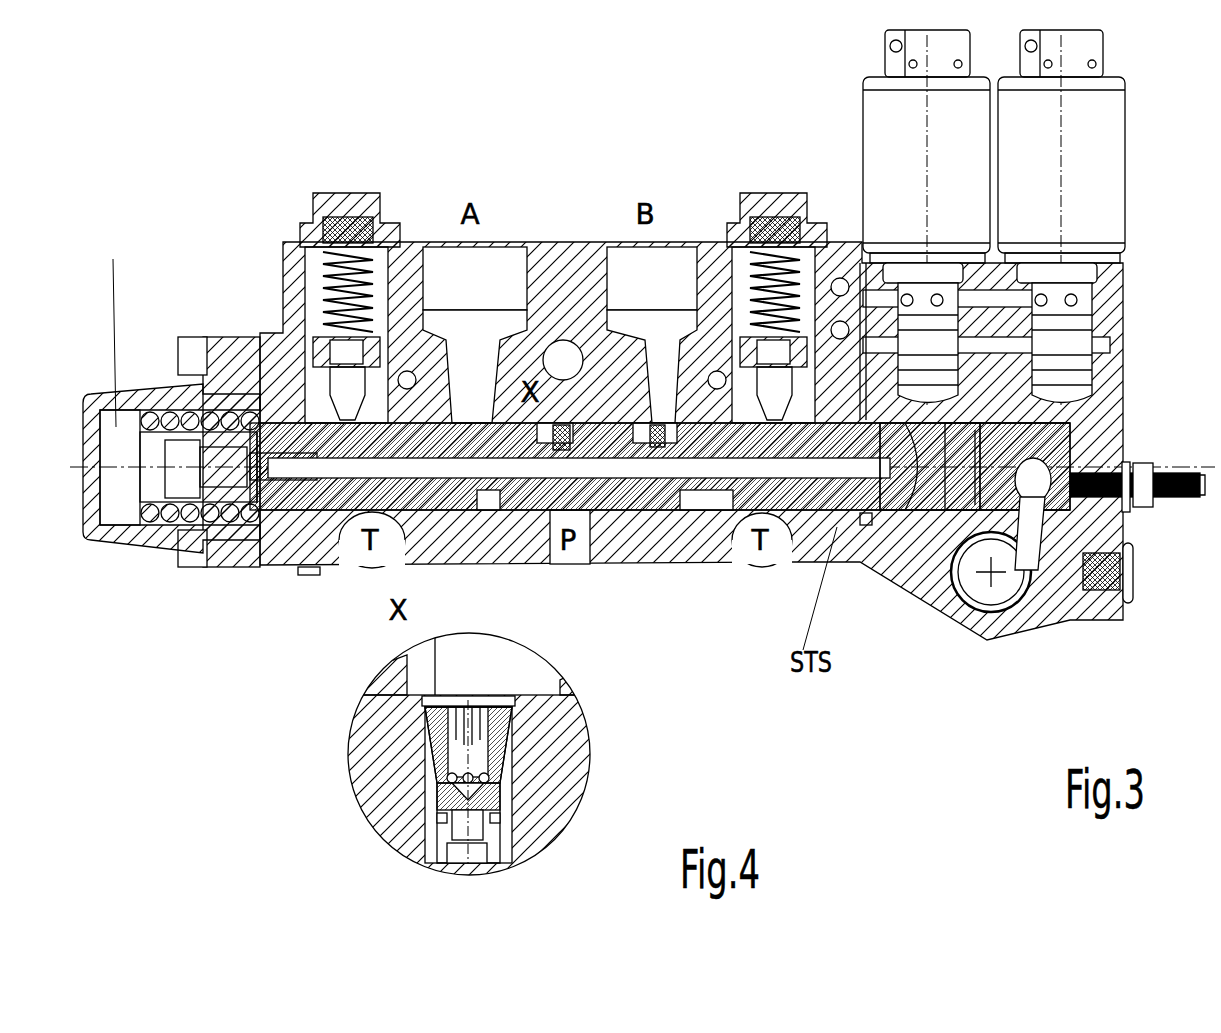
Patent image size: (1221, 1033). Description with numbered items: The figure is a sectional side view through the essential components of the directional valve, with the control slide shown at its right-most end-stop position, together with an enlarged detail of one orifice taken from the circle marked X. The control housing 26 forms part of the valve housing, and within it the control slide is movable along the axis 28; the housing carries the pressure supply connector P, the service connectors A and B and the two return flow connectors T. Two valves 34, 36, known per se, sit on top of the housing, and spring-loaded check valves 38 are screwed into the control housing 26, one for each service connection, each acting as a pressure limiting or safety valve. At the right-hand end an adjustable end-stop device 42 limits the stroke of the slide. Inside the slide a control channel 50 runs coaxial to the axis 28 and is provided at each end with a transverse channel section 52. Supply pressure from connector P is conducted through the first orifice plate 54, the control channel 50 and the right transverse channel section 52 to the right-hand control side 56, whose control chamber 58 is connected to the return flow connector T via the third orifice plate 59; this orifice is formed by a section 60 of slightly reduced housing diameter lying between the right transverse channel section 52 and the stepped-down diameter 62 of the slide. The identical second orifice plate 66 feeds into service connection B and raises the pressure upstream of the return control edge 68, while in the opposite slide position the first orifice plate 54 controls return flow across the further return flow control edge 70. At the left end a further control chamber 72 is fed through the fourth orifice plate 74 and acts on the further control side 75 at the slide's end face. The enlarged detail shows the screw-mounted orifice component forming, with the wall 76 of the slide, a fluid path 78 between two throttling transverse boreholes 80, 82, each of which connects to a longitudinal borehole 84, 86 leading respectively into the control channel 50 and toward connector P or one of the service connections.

In FIG. 3, the control housing 26 is at (947, 513).
In FIG. 3, the axis 28 is at (120, 378).
In FIG. 3, the valve 34 is at (937, 136).
In FIG. 3, the valve 36 is at (1073, 136).
In FIG. 3, the spring-loaded check valve 38 is at (372, 218).
In FIG. 3, the end-stop device 42 is at (1070, 620).
In FIG. 3, the control channel 50 is at (705, 540).
In FIG. 3, the transverse channel section 52 is at (880, 513).
In FIG. 3, the first orifice plate 54 is at (567, 450).
In FIG. 4, the first orifice plate 54 is at (497, 700).
In FIG. 3, the right-hand control side 56 is at (915, 513).
In FIG. 3, the control chamber 58 is at (983, 600).
In FIG. 3, the third orifice plate 59 is at (1057, 333).
In FIG. 3, the section 60 is at (872, 400).
In FIG. 3, the diameter 62 is at (945, 513).
In FIG. 3, the second orifice plate 66 is at (657, 423).
In FIG. 3, the return control edge 68 is at (723, 470).
In FIG. 3, the return flow control edge 70 is at (337, 380).
In FIG. 3, the further control chamber 72 is at (123, 540).
In FIG. 3, the fourth orifice plate 74 is at (240, 563).
In FIG. 3, the further control side 75 is at (260, 395).
In FIG. 4, the wall 76 is at (507, 773).
In FIG. 4, the fluid path 78 is at (500, 797).
In FIG. 4, the throttling transverse borehole 80 is at (443, 777).
In FIG. 4, the throttling transverse borehole 82 is at (443, 820).
In FIG. 4, the longitudinal borehole 84 is at (500, 823).
In FIG. 4, the longitudinal borehole 86 is at (457, 723).